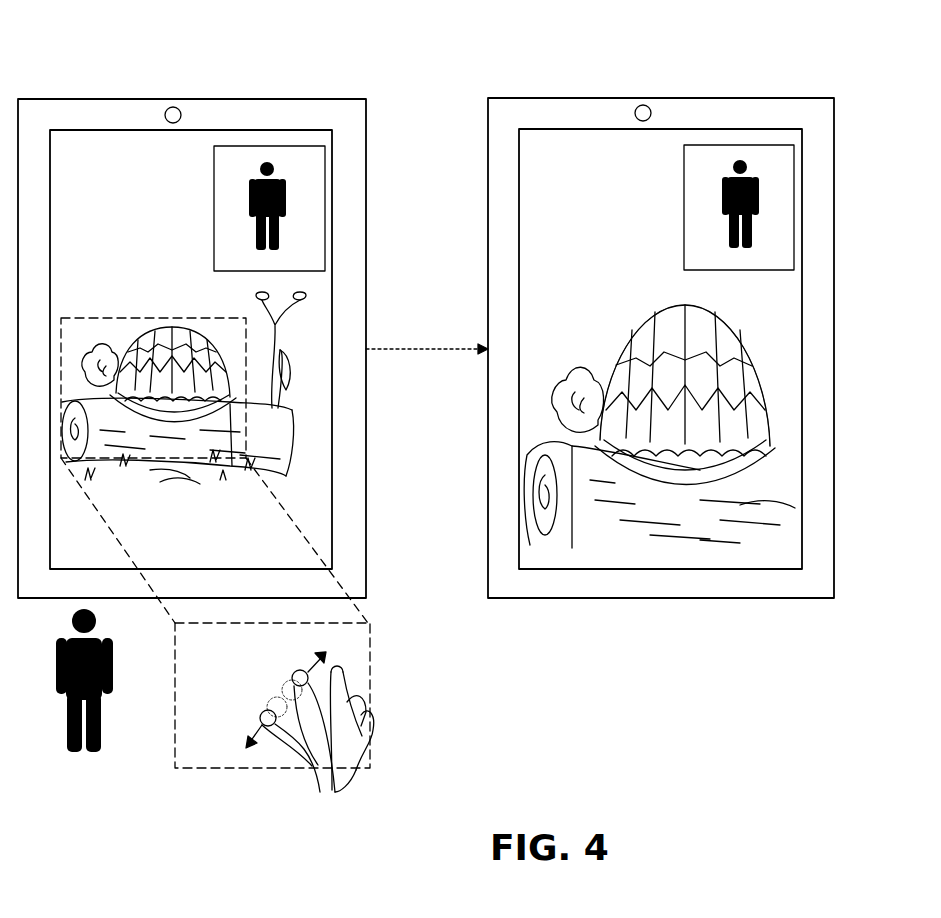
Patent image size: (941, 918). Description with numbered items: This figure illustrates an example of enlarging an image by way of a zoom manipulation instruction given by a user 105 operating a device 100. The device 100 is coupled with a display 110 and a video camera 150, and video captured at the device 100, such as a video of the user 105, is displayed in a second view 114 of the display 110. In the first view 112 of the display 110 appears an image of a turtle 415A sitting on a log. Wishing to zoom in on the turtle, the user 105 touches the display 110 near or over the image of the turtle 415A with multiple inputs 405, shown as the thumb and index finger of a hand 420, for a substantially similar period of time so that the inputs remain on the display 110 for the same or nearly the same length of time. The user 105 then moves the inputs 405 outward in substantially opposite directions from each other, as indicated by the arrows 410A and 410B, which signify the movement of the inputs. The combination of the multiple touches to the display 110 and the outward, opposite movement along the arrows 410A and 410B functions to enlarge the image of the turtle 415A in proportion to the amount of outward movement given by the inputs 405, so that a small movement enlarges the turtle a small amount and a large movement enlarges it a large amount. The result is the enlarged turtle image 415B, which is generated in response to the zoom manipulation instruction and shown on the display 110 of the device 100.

The device 100 is at (251, 40).
The display 110 is at (85, 130).
The video camera 150 is at (165, 108).
The second view 114 is at (306, 224).
The first view 112 is at (318, 311).
The image of the turtle 415A is at (168, 326).
The enlarged turtle image 415B is at (757, 413).
The user 105 is at (100, 782).
The inputs 405 is at (335, 778).
The arrow 410A is at (262, 738).
The arrow 410B is at (322, 655).
The hand 420 is at (353, 707).